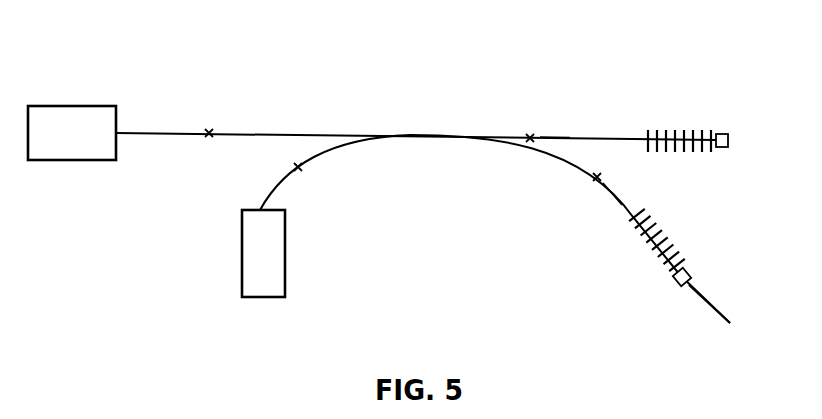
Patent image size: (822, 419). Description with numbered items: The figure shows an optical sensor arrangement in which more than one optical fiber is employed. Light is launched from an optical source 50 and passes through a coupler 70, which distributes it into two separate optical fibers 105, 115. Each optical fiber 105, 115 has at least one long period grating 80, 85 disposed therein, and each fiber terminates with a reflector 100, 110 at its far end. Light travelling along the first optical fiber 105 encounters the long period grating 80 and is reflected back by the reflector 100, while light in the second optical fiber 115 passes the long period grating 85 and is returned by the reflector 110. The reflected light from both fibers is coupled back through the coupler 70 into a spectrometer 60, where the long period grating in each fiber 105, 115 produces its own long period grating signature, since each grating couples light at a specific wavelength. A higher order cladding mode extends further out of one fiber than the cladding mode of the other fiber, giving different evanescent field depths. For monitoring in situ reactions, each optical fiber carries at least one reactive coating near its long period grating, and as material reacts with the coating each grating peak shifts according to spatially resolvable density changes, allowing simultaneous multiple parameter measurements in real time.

The optical source 50 is at (72, 106).
The spectrometer 60 is at (240, 257).
The coupler 70 is at (421, 133).
The long period grating 80 is at (677, 172).
The long period grating 85 is at (642, 268).
The reflector 100 is at (728, 140).
The optical fiber 105 is at (555, 120).
The reflector 110 is at (726, 305).
The optical fiber 115 is at (603, 208).